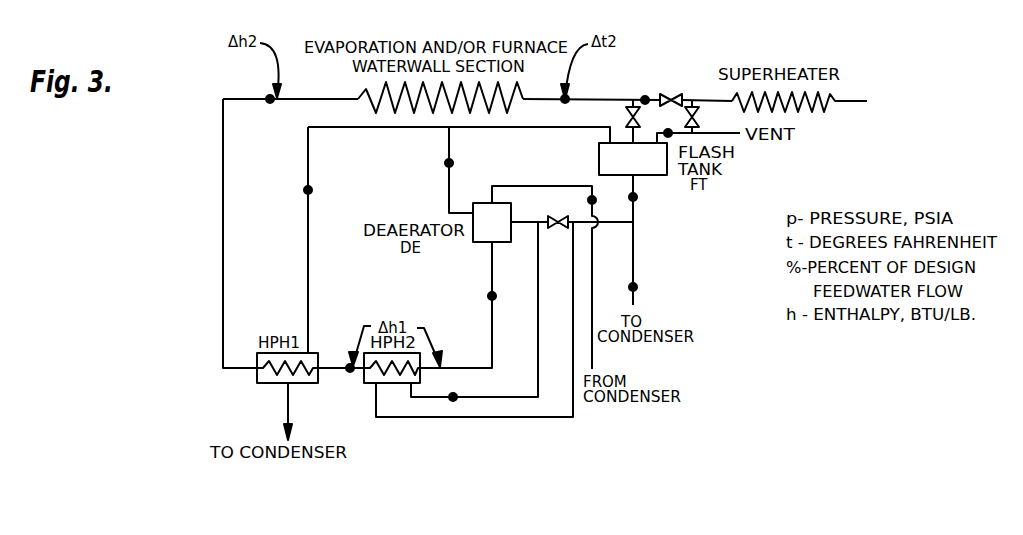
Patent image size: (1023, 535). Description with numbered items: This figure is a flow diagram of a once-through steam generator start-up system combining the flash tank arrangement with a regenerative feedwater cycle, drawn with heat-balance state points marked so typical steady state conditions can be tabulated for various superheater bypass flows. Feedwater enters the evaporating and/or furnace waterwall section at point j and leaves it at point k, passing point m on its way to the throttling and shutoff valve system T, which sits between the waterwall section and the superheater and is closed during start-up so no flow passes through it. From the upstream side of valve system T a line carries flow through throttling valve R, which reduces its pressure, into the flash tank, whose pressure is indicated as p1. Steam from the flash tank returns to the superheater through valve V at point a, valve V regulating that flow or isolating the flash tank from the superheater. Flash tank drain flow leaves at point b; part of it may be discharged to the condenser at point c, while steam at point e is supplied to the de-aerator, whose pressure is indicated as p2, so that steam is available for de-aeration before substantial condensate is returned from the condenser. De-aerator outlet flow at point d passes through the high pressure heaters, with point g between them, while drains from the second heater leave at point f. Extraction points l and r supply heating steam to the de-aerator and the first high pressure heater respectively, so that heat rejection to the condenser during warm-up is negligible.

The feedwater inlet point to evaporation section j is at (269, 97).
The outlet point of evaporation section k is at (565, 99).
The point upstream of throttle valve T m is at (645, 99).
The vent point of flash tank a is at (668, 132).
The flash tank drain point b is at (634, 197).
The drain to condenser point c is at (633, 287).
The deaerator outlet point d is at (491, 296).
The flash tank vapor to deaerator point e is at (593, 200).
The HPH2 drain point f is at (454, 397).
The point between HPH1 and HPH2 g is at (349, 366).
The extraction steam point to deaerator l is at (450, 163).
The extraction steam point to HPH1 r is at (309, 190).
The throttling and shutoff valve system T is at (671, 91).
The throttling valve R is at (627, 117).
The valve V is at (697, 117).
The flash tank pressure p1 is at (633, 159).
The deaerator pressure p2 is at (492, 222).